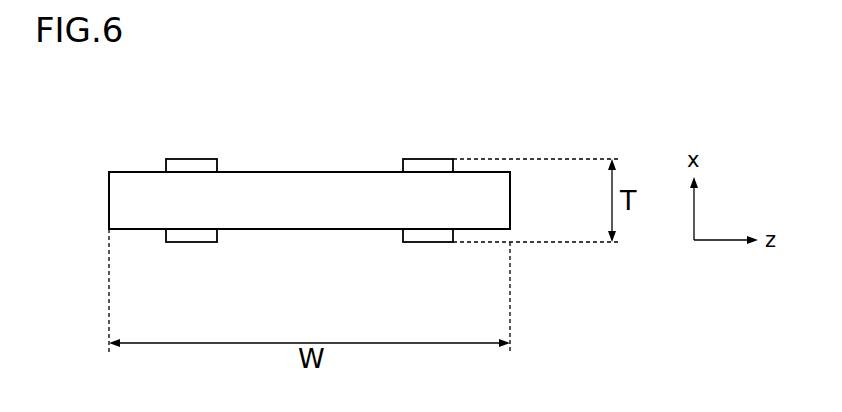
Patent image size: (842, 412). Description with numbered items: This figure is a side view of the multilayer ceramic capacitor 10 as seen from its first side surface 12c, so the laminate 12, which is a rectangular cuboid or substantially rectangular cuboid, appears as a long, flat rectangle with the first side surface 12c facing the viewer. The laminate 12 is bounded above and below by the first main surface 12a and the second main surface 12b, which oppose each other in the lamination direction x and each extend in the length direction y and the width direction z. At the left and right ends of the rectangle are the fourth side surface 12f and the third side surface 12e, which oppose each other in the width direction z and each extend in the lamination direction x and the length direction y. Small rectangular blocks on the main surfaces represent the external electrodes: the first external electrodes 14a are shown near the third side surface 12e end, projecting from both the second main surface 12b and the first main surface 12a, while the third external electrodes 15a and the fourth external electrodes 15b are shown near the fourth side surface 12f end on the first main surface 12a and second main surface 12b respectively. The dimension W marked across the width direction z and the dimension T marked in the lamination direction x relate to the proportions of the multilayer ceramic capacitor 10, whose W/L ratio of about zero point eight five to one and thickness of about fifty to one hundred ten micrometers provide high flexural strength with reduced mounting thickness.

The multilayer ceramic capacitor 10 is at (524, 114).
The laminate 12 is at (273, 240).
The first main surface 12a is at (333, 232).
The second main surface 12b is at (327, 172).
The first side surface 12c is at (276, 195).
The third side surface 12e is at (510, 200).
The fourth side surface 12f is at (109, 203).
The first external electrodes 14a is at (437, 165).
The third external electrodes 15a is at (182, 236).
The fourth external electrodes 15b is at (183, 165).